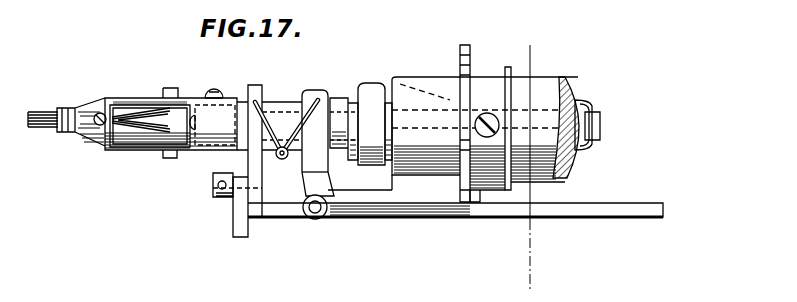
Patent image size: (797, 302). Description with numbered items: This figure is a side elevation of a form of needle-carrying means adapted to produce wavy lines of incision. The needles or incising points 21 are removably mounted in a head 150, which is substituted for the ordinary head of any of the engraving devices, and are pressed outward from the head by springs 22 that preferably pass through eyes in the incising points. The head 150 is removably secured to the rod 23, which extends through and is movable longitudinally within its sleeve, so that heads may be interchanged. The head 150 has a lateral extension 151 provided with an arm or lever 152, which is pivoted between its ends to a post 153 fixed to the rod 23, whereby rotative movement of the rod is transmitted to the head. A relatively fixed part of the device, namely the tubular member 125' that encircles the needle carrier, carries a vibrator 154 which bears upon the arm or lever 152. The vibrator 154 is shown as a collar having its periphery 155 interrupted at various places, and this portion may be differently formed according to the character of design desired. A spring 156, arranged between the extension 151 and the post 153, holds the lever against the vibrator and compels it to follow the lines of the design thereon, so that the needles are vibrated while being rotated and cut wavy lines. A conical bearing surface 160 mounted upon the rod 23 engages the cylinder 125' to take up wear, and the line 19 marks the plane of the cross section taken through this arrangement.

The incising points 21 is at (40, 109).
The springs 22 is at (140, 122).
The rod 23 is at (600, 124).
The tubular member 125' is at (485, 103).
The head 150 is at (171, 100).
The lateral extension 151 is at (258, 86).
The arm or lever 152 is at (474, 196).
The post 153 is at (323, 93).
The vibrator 154 is at (480, 196).
The periphery 155 is at (470, 82).
The spring 156 is at (282, 159).
The conical bearing surface 160 is at (443, 140).
The section line 19- 19 is at (560, 33).